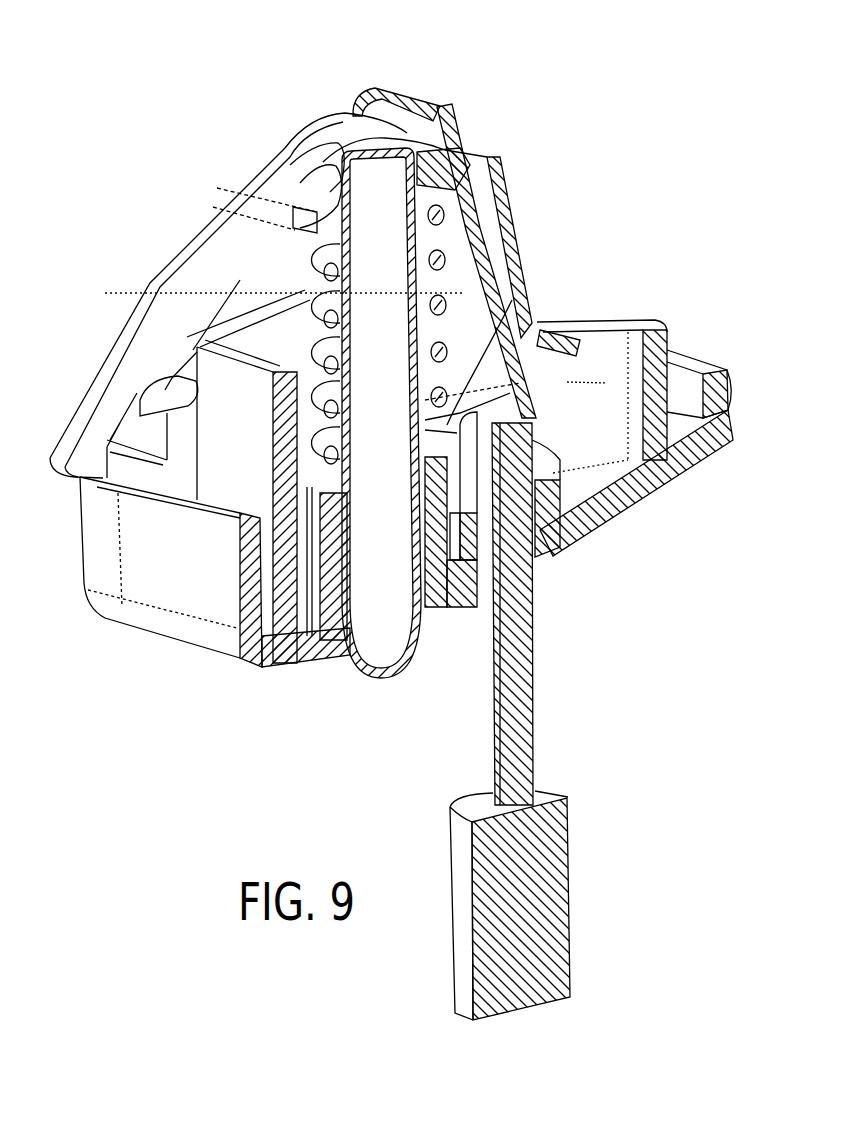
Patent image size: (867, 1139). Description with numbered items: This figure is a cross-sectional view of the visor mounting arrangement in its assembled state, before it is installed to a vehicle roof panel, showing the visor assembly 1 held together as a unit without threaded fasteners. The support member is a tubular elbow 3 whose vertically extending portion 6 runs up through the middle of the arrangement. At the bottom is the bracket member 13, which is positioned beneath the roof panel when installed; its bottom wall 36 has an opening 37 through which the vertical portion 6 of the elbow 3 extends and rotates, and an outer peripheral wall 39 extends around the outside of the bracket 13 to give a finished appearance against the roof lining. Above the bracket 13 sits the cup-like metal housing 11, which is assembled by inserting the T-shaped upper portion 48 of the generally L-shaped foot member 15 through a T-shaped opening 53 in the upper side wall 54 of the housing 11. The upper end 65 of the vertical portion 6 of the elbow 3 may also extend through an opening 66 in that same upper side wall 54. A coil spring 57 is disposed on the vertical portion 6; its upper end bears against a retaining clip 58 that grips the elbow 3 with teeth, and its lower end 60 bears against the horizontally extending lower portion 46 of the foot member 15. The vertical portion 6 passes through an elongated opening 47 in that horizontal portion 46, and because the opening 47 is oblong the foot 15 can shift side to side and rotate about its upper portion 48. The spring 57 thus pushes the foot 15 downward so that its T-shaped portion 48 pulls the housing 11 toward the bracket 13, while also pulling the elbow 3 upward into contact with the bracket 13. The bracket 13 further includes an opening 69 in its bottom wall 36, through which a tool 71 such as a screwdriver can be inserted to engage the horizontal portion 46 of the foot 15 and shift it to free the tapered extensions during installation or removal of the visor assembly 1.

The visor assembly 1 is at (221, 722).
The elbow 3 is at (380, 647).
The vertically extending portion 6 is at (493, 207).
The housing 11 is at (540, 247).
The bracket member 13 is at (697, 490).
The foot member 15 is at (481, 126).
The bottom wall 36 is at (620, 505).
The opening 37 is at (333, 655).
The outer peripheral wall 39 is at (733, 380).
The horizontally extending lower portion 46 is at (467, 603).
The elongated opening 47 is at (548, 335).
The T-shaped upper portion 48 is at (384, 95).
The T-shaped opening 53 is at (350, 117).
The upper side wall 54 is at (283, 167).
The coil spring 57 is at (150, 284).
The retaining clip 58 is at (225, 183).
The lower end 60 is at (313, 640).
The upper end 65 is at (323, 133).
The opening 66 is at (343, 150).
The opening 69 is at (533, 560).
The tool 71 is at (580, 881).